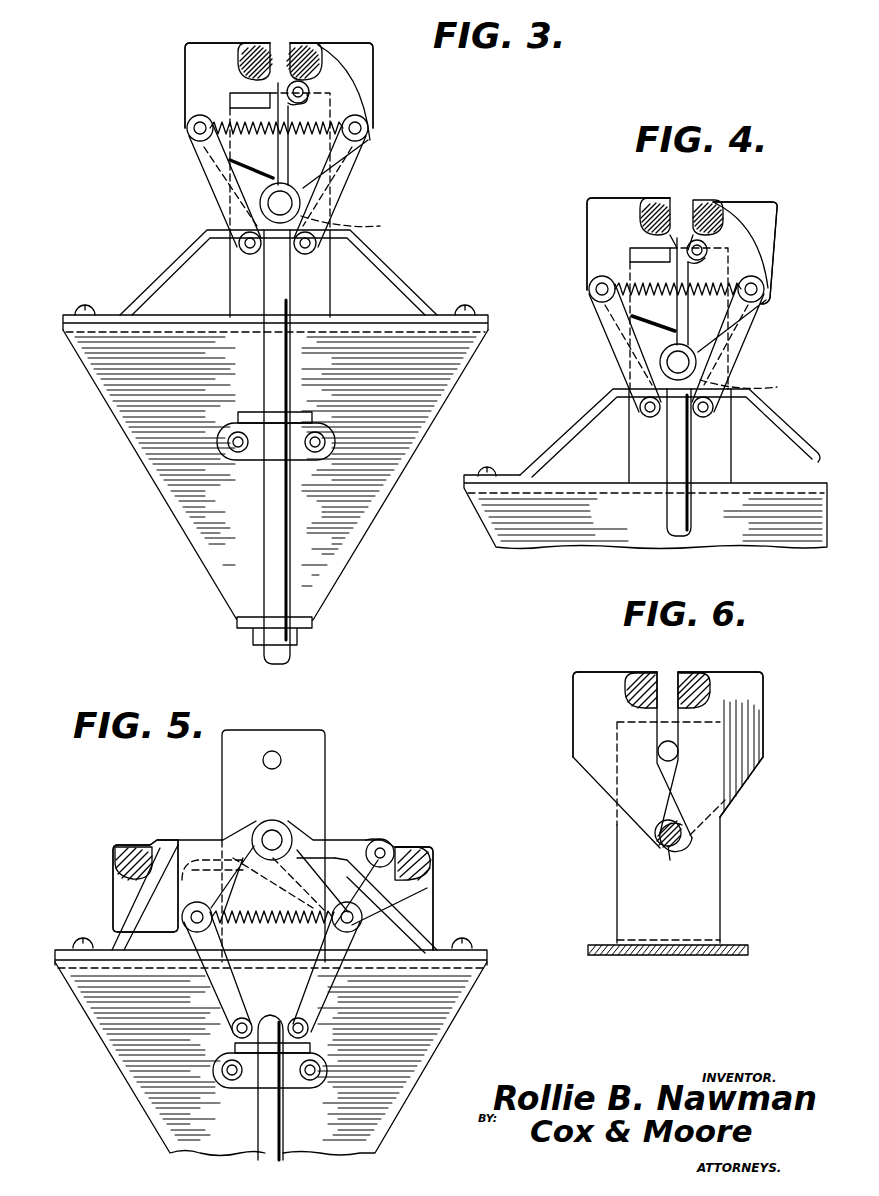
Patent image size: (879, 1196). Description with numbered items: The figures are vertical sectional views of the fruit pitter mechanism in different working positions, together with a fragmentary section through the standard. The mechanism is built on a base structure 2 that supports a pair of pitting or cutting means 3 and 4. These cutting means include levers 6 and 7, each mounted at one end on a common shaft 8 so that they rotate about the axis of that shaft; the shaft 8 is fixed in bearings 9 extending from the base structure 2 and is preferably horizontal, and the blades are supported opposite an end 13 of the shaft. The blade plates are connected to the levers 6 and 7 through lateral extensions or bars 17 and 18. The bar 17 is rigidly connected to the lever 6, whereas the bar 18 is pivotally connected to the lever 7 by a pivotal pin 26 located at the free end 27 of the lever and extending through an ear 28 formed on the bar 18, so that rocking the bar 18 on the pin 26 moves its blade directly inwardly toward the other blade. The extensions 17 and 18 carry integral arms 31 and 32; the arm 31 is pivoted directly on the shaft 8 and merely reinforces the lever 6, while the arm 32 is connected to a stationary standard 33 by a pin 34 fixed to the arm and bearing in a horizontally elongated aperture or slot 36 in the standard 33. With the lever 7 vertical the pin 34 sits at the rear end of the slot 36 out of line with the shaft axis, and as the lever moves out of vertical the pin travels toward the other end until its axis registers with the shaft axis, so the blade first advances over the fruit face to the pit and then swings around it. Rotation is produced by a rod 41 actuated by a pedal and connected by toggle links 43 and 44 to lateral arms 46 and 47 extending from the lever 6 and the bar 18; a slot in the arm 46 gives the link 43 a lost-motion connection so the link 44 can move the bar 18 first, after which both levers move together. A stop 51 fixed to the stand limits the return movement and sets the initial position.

In FIG. 3, the base structure 2 is at (402, 278).
In FIG. 4, the base structure 2 is at (550, 445).
In FIG. 5, the base structure 2 is at (490, 948).
In FIG. 6, the base structure 2 is at (722, 940).
In FIG. 3, the pitting or cutting means 3 is at (183, 78).
In FIG. 4, the pitting or cutting means 3 is at (585, 213).
In FIG. 5, the pitting or cutting means 3 is at (113, 878).
In FIG. 6, the pitting or cutting means 3 is at (567, 712).
In FIG. 3, the pitting or cutting means 4 is at (378, 127).
In FIG. 4, the pitting or cutting means 4 is at (780, 278).
In FIG. 5, the pitting or cutting means 4 is at (435, 912).
In FIG. 6, the pitting or cutting means 4 is at (771, 681).
In FIG. 3, the lever 6 is at (238, 176).
In FIG. 4, the lever 6 is at (669, 339).
In FIG. 5, the lever 6 is at (158, 842).
In FIG. 3, the lever 7 is at (290, 182).
In FIG. 4, the lever 7 is at (689, 340).
In FIG. 5, the lever 7 is at (350, 843).
In FIG. 3, the shaft 8 is at (294, 205).
In FIG. 4, the shaft 8 is at (690, 364).
In FIG. 5, the shaft 8 is at (268, 834).
In FIG. 6, the shaft 8 is at (698, 825).
In FIG. 3, the bearings 9 is at (349, 230).
In FIG. 4, the bearings 9 is at (747, 384).
In FIG. 5, the bearings 9 is at (313, 842).
In FIG. 6, the end of the shaft 13 is at (660, 825).
In FIG. 3, the lateral extension or bar 17 is at (258, 50).
In FIG. 4, the lateral extension or bar 17 is at (660, 198).
In FIG. 5, the lateral extension or bar 17 is at (125, 848).
In FIG. 6, the lateral extension or bar 17 is at (647, 673).
In FIG. 3, the lateral extension or bar 18 is at (308, 48).
In FIG. 4, the lateral extension or bar 18 is at (715, 205).
In FIG. 5, the lateral extension or bar 18 is at (432, 865).
In FIG. 6, the lateral extension or bar 18 is at (697, 672).
In FIG. 3, the pivotal pin 26 is at (309, 91).
In FIG. 4, the pivotal pin 26 is at (707, 247).
In FIG. 5, the pivotal pin 26 is at (390, 850).
In FIG. 3, the free end of the lever 27 is at (304, 101).
In FIG. 4, the free end of the lever 27 is at (708, 260).
In FIG. 5, the free end of the lever 27 is at (383, 847).
In FIG. 4, the ear 28 is at (683, 238).
In FIG. 5, the ear 28 is at (415, 843).
In FIG. 3, the arm 31 is at (187, 47).
In FIG. 4, the arm 31 is at (598, 244).
In FIG. 5, the arm 31 is at (113, 908).
In FIG. 6, the arm 31 is at (587, 749).
In FIG. 3, the arm 32 is at (374, 47).
In FIG. 4, the arm 32 is at (780, 212).
In FIG. 5, the arm 32 is at (424, 925).
In FIG. 6, the arm 32 is at (748, 735).
In FIG. 3, the stationary standard 33 is at (313, 293).
In FIG. 4, the stationary standard 33 is at (718, 453).
In FIG. 6, the stationary standard 33 is at (700, 882).
In FIG. 6, the pin 34 is at (694, 839).
In FIG. 6, the aperture or slot 36 is at (669, 848).
In FIG. 3, the rod 41 is at (281, 527).
In FIG. 4, the rod 41 is at (693, 517).
In FIG. 5, the rod 41 is at (284, 1120).
In FIG. 3, the toggle link 43 is at (218, 192).
In FIG. 4, the toggle link 43 is at (618, 361).
In FIG. 5, the toggle link 43 is at (218, 992).
In FIG. 3, the toggle link 44 is at (328, 183).
In FIG. 4, the toggle link 44 is at (745, 354).
In FIG. 5, the toggle link 44 is at (322, 997).
In FIG. 3, the lateral arm 46 is at (192, 118).
In FIG. 4, the lateral arm 46 is at (596, 273).
In FIG. 5, the lateral arm 46 is at (188, 842).
In FIG. 4, the lateral arm 47 is at (718, 205).
In FIG. 5, the lateral arm 47 is at (435, 893).
In FIG. 5, the stop 51 is at (276, 752).
In FIG. 6, the stop 51 is at (679, 752).